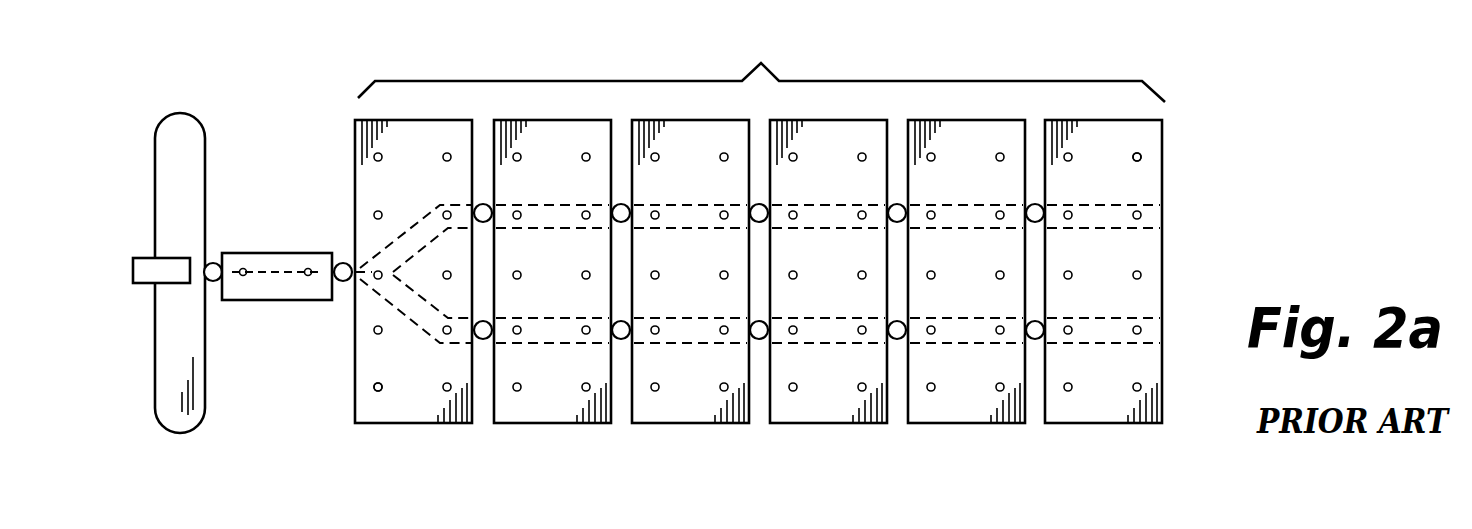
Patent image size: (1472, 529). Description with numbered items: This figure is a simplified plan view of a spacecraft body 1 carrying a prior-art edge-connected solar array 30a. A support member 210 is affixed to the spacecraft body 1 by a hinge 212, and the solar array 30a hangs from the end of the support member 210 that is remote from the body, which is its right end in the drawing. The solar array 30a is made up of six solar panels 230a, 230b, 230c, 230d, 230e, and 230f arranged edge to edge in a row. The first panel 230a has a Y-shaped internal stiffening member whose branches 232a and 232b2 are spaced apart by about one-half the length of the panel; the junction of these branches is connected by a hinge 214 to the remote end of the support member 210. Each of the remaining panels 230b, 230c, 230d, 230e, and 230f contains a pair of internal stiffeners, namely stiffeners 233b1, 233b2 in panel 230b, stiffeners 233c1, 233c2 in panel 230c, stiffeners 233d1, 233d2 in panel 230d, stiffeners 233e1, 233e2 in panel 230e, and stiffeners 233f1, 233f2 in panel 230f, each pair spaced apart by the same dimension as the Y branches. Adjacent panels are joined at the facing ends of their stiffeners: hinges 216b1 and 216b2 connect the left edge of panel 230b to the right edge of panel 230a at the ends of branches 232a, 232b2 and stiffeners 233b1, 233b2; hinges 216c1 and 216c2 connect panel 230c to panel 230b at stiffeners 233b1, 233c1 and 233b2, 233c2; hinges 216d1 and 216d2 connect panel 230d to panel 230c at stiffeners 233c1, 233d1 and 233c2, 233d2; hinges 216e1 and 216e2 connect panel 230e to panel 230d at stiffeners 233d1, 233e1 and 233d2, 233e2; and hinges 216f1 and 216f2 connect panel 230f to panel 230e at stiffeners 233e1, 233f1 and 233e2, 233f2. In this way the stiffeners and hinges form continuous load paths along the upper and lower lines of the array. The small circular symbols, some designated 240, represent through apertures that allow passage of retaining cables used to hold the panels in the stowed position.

The spacecraft body 1 is at (155, 203).
The hinge 212 is at (215, 261).
The hinge 214 is at (343, 261).
The support member 210 is at (293, 300).
The solar array 30a is at (761, 58).
The through apertures 240 is at (374, 387).
The stiffening member branch 232a is at (405, 230).
The stiffening member branch 232b2 is at (412, 316).
The solar panel 230a is at (418, 423).
The solar panel 230b is at (557, 423).
The solar panel 230c is at (695, 423).
The solar panel 230d is at (833, 423).
The solar panel 230e is at (971, 423).
The solar panel 230f is at (1108, 423).
The hinge 216b1 is at (483, 204).
The hinge 216b2 is at (483, 321).
The hinge 216c1 is at (621, 204).
The hinge 216c2 is at (621, 321).
The hinge 216d1 is at (759, 204).
The hinge 216d2 is at (759, 321).
The hinge 216e1 is at (897, 204).
The hinge 216e2 is at (897, 321).
The hinge 216f1 is at (1035, 204).
The hinge 216f2 is at (1035, 321).
The internal stiffener 233b1 is at (594, 232).
The internal stiffener 233b2 is at (502, 347).
The internal stiffener 233c1 is at (732, 232).
The internal stiffener 233c2 is at (732, 350).
The internal stiffener 233d1 is at (870, 232).
The internal stiffener 233d2 is at (870, 350).
The internal stiffener 233e1 is at (1008, 232).
The internal stiffener 233e2 is at (1008, 350).
The internal stiffener 233f1 is at (1145, 232).
The internal stiffener 233f2 is at (1145, 350).